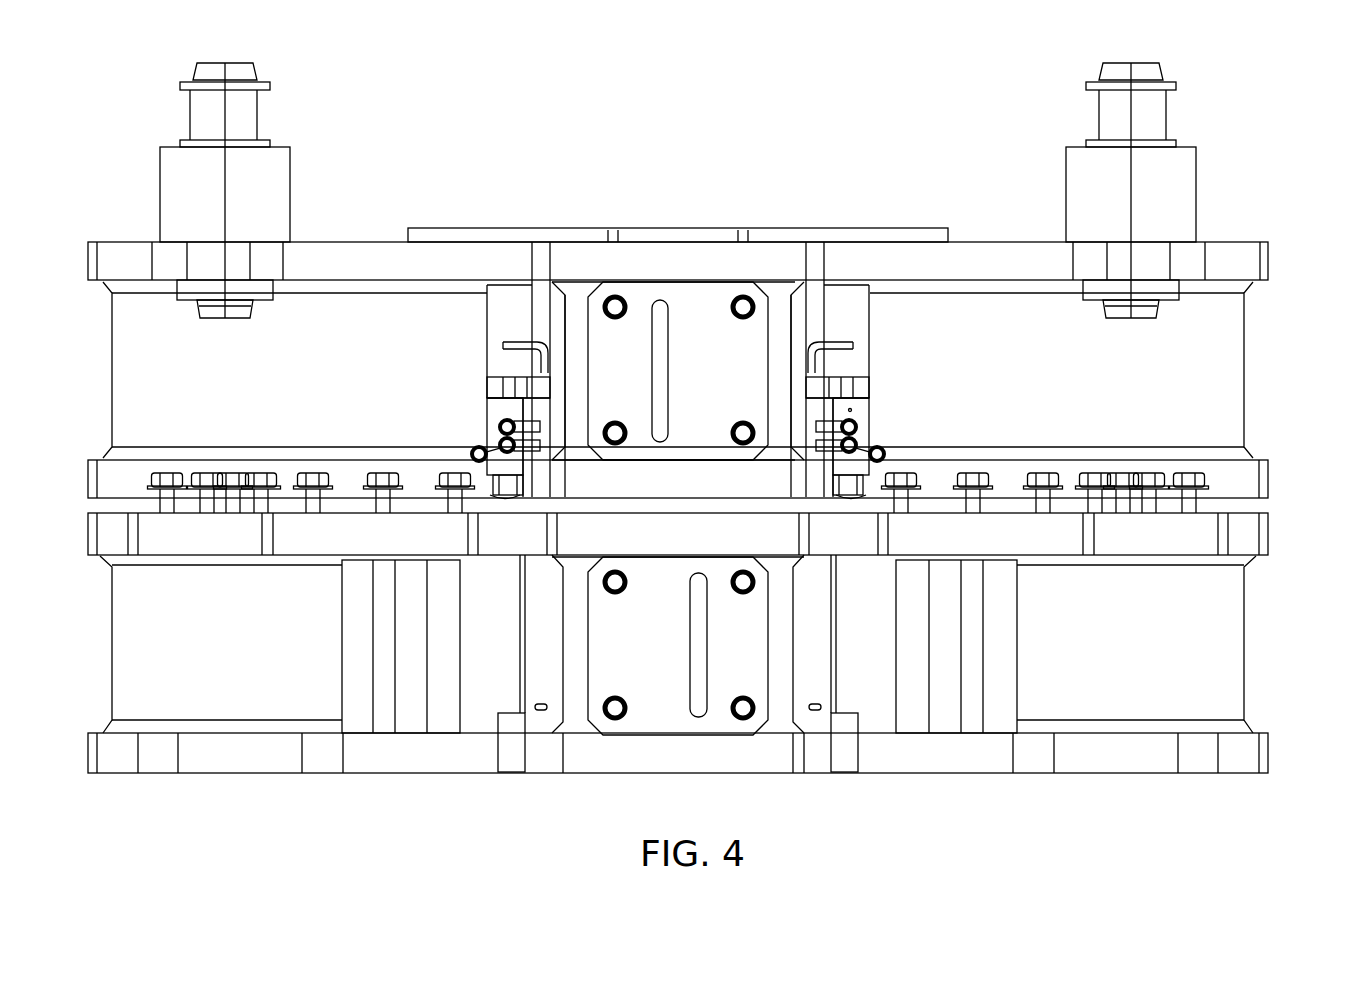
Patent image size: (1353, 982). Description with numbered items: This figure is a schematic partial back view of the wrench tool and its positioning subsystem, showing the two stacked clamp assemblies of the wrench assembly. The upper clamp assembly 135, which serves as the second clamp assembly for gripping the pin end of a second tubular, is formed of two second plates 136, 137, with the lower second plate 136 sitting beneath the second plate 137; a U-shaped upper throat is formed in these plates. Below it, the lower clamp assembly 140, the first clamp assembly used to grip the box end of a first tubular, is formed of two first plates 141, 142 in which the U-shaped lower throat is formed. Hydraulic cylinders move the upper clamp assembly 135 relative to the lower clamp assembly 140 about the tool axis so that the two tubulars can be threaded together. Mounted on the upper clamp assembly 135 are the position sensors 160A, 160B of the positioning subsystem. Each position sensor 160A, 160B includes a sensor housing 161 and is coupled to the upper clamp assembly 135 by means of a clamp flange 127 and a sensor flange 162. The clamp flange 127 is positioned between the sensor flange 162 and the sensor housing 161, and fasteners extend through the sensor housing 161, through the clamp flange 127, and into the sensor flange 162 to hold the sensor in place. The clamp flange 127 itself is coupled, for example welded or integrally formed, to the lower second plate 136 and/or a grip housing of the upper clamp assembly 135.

The clamp flange 127 is at (538, 392).
The upper clamp assembly 135 is at (1252, 357).
The lower second plate 136 is at (1243, 478).
The second plate 137 is at (1226, 267).
The lower clamp assembly 140 is at (1262, 667).
The first plate 141 is at (1248, 758).
The first plate 142 is at (1197, 536).
The position sensor 160A is at (883, 391).
The position sensor 160B is at (474, 391).
The sensor housing 161 is at (474, 450).
The sensor flange 162 is at (520, 342).